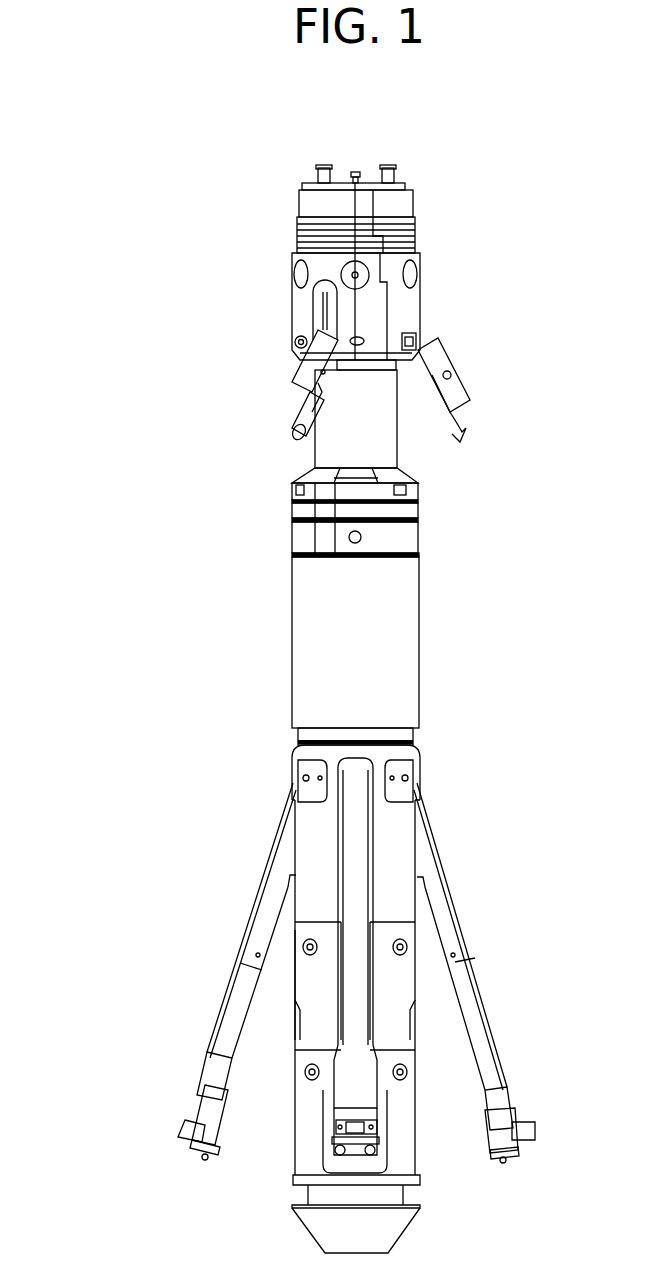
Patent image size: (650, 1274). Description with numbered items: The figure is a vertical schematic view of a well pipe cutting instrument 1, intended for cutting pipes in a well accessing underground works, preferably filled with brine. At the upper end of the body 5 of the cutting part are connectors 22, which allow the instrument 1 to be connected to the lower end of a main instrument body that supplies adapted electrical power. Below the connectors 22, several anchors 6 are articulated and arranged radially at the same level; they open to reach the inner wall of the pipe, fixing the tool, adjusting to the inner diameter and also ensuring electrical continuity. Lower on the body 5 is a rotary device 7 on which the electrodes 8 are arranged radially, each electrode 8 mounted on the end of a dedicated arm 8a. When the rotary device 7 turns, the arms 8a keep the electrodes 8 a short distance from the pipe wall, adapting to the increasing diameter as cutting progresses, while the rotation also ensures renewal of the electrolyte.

The instrument 1 is at (172, 529).
The body 5 is at (421, 600).
The anchor 6 is at (300, 415).
The rotary device 7 is at (412, 738).
The electrode 8 is at (332, 1143).
The arm 8a is at (253, 945).
The connectors 22 is at (385, 163).